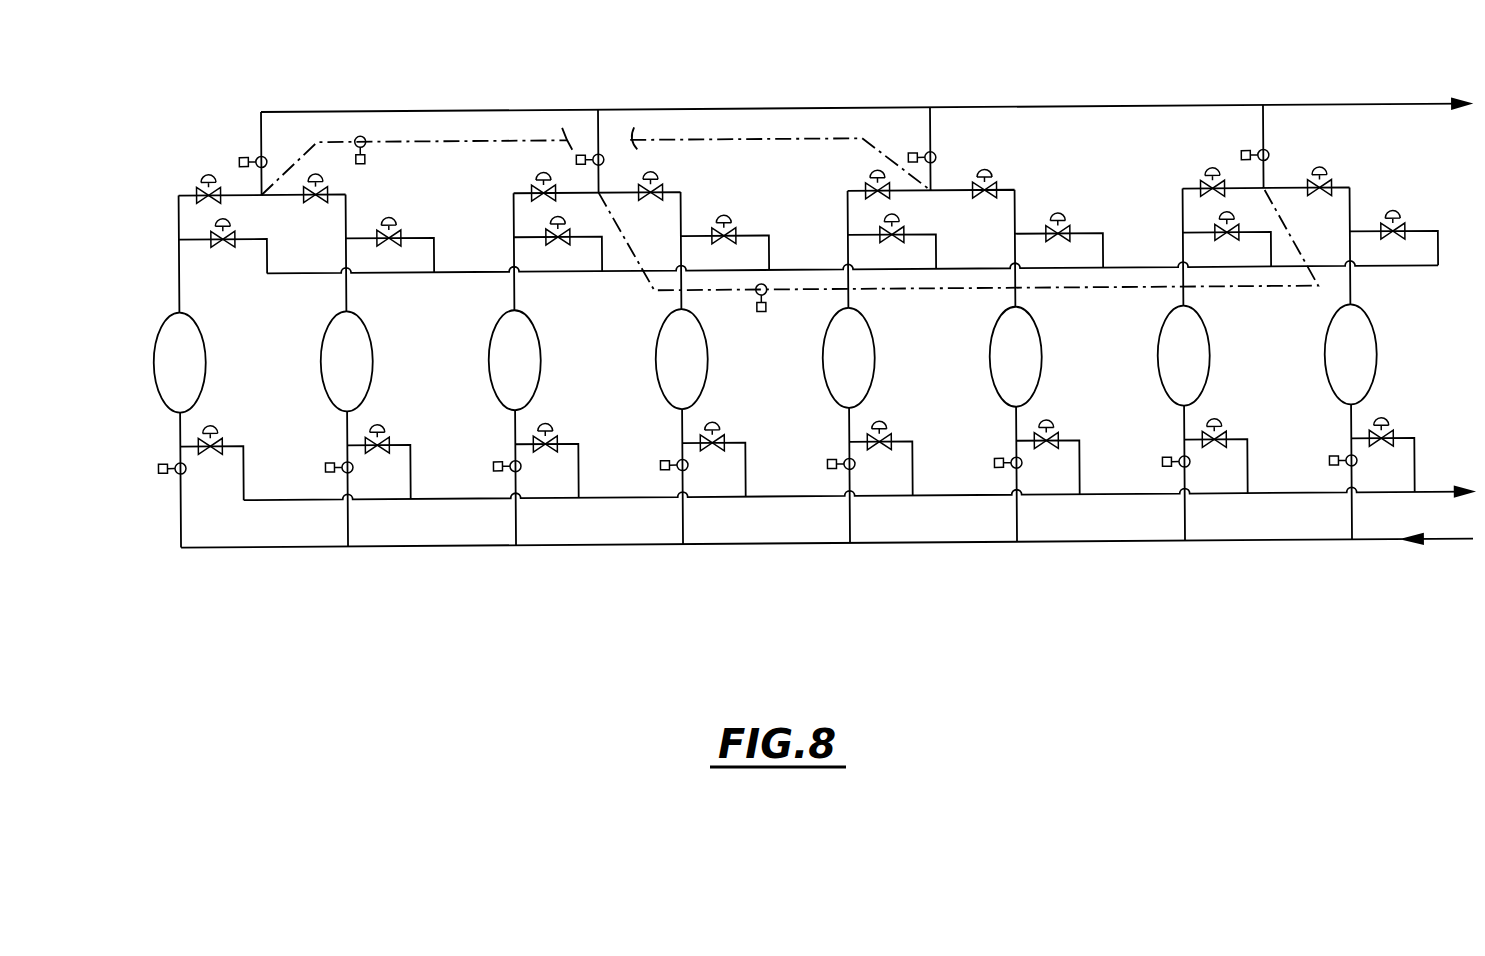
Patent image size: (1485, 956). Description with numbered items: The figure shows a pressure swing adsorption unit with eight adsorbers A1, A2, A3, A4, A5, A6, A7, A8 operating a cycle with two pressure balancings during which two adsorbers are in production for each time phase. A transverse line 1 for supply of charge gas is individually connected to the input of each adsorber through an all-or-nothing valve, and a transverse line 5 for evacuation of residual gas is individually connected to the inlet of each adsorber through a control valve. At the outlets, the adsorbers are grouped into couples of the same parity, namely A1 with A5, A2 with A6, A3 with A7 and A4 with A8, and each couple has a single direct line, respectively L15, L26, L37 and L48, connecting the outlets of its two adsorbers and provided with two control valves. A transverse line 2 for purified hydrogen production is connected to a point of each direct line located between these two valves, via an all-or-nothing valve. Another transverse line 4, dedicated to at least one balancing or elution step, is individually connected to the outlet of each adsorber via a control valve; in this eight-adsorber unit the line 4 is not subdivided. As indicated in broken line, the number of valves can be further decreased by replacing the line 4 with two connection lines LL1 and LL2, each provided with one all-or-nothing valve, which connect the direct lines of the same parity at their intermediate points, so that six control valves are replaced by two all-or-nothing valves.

The transverse line 1 is at (1268, 547).
The transverse line 2 is at (1343, 112).
The transverse line 4 is at (1375, 275).
The transverse line 5 is at (1424, 500).
The direct line L15 is at (347, 222).
The direct line L26 is at (682, 216).
The direct line L37 is at (1014, 213).
The direct line L48 is at (1349, 211).
The connection line LL1 is at (838, 142).
The connection line LL2 is at (1097, 300).
The adsorber A1 is at (179, 362).
The adsorber A2 is at (514, 360).
The adsorber A3 is at (848, 358).
The adsorber A4 is at (1183, 355).
The adsorber A5 is at (346, 361).
The adsorber A6 is at (681, 359).
The adsorber A7 is at (1015, 357).
The adsorber A8 is at (1350, 354).